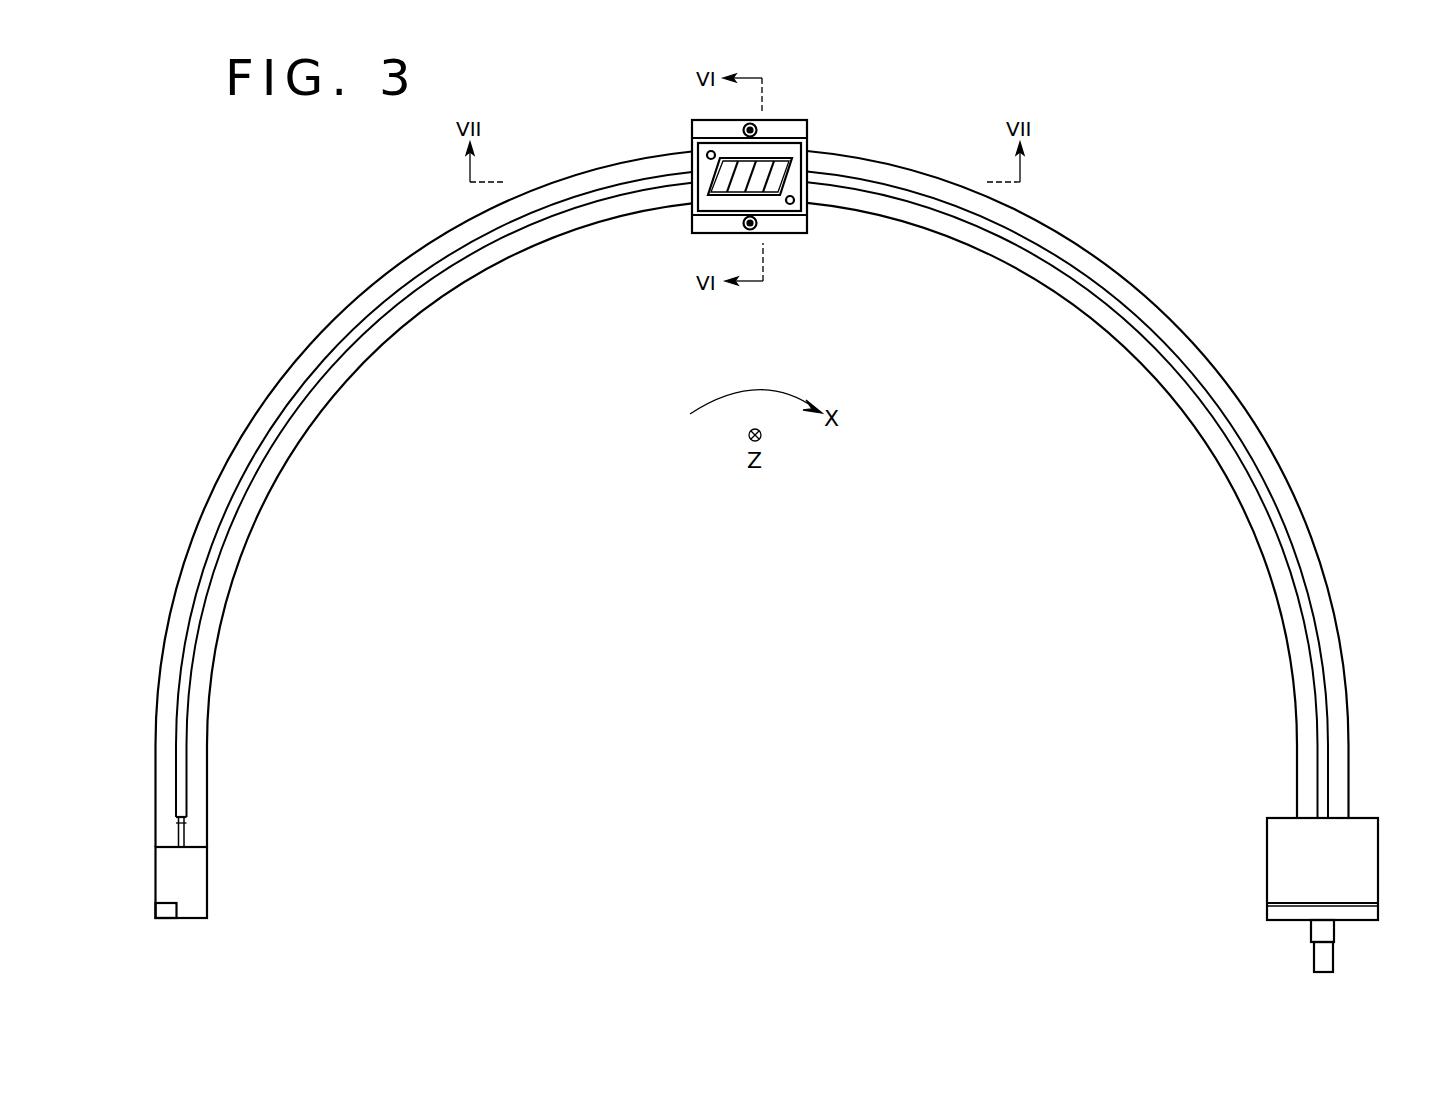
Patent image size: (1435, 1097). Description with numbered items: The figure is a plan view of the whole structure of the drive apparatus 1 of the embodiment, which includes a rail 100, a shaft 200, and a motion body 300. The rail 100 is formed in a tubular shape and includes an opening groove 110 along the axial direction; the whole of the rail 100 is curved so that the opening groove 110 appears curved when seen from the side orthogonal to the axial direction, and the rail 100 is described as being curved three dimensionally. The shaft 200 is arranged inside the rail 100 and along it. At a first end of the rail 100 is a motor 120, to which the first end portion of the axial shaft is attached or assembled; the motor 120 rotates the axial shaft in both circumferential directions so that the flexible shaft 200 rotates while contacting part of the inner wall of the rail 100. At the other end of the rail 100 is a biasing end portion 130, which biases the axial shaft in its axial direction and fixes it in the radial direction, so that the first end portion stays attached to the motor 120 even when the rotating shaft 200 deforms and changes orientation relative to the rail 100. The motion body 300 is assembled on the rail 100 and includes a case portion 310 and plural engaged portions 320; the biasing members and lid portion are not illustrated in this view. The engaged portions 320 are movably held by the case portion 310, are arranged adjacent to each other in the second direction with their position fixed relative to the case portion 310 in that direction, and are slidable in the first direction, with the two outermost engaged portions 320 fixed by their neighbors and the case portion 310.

The drive apparatus 1 is at (1229, 247).
The rail 100 is at (253, 442).
The opening groove 110 is at (298, 404).
The motor 120 is at (1362, 862).
The biasing end portion 130 is at (170, 876).
The shaft 200 is at (1268, 508).
The motion body 300 is at (790, 126).
The case portion 310 is at (797, 148).
The engaged portions 320 is at (705, 186).